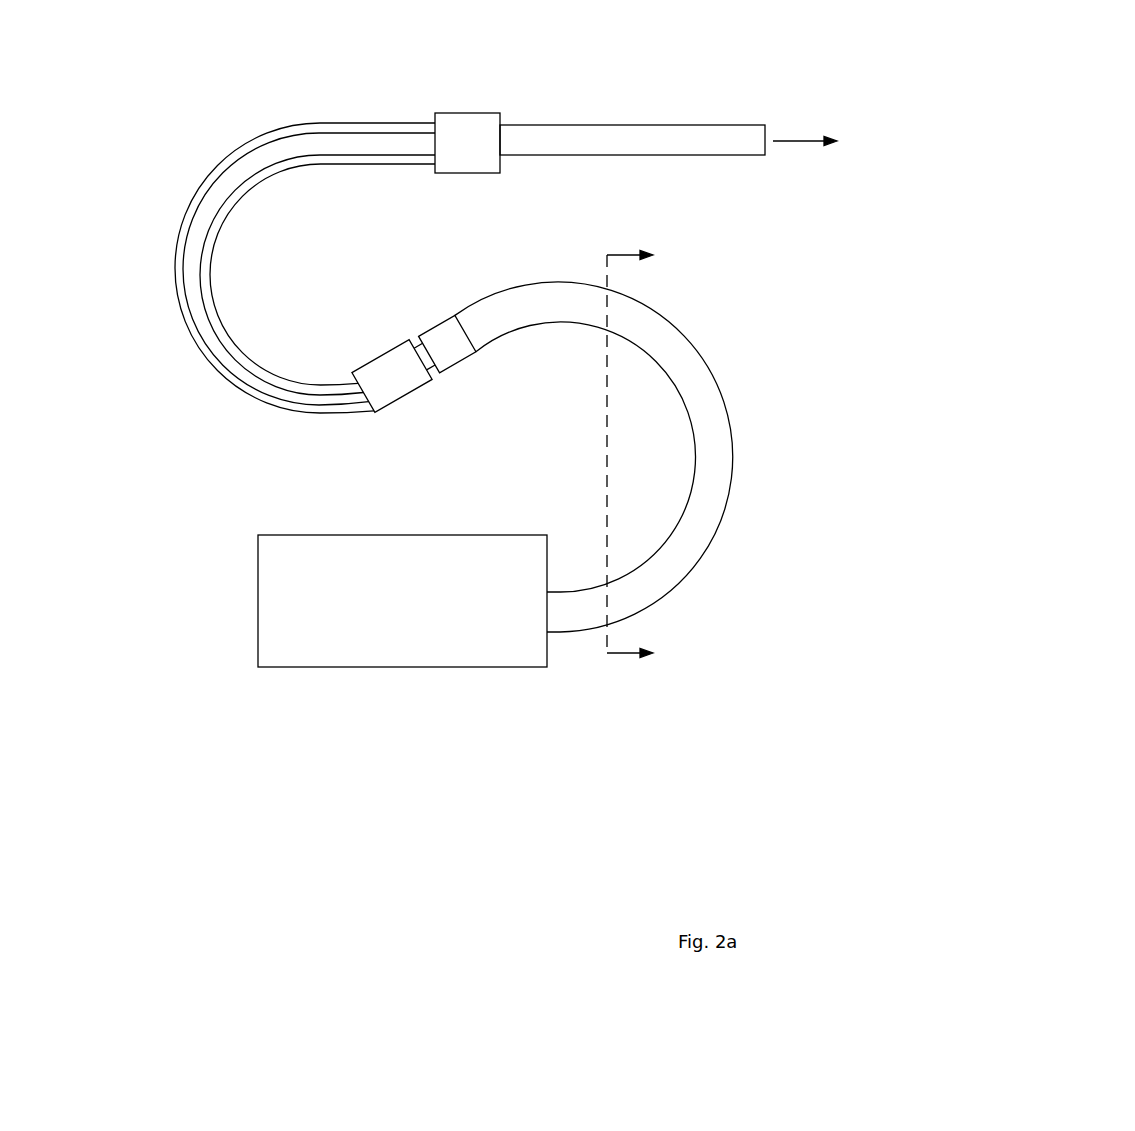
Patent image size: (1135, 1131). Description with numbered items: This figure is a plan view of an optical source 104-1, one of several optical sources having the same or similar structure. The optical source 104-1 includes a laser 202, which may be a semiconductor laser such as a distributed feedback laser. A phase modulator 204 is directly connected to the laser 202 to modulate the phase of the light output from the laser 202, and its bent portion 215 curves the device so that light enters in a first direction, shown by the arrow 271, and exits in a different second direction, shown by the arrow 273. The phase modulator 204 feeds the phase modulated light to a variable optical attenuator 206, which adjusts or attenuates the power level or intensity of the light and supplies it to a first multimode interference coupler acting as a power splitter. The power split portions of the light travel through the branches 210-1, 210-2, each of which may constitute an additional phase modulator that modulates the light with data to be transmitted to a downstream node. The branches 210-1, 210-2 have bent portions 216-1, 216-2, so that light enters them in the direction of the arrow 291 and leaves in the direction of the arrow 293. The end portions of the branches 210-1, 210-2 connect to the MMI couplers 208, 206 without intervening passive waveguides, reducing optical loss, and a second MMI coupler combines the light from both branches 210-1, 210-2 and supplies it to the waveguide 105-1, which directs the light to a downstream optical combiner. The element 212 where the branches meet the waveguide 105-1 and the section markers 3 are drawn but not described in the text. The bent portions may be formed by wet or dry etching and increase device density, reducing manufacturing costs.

The optical source 104-1 is at (176, 864).
The waveguide 105-1 is at (617, 125).
The laser 202 is at (393, 667).
The phase modulator 204 is at (664, 524).
The variable optical attenuator 206 is at (463, 365).
The MMI coupler 208 is at (395, 402).
The branch 210-1 is at (317, 275).
The branch 210-2 is at (262, 268).
The fiber combiner 212 is at (453, 112).
The bent portion 215 is at (733, 426).
The bent portion 216-1 is at (179, 234).
The bent portion 216-2 is at (225, 228).
The arrow 271 is at (532, 697).
The arrow 273 is at (465, 290).
The arrow 291 is at (380, 421).
The arrow 293 is at (324, 110).
The section line 3- 3 is at (640, 455).